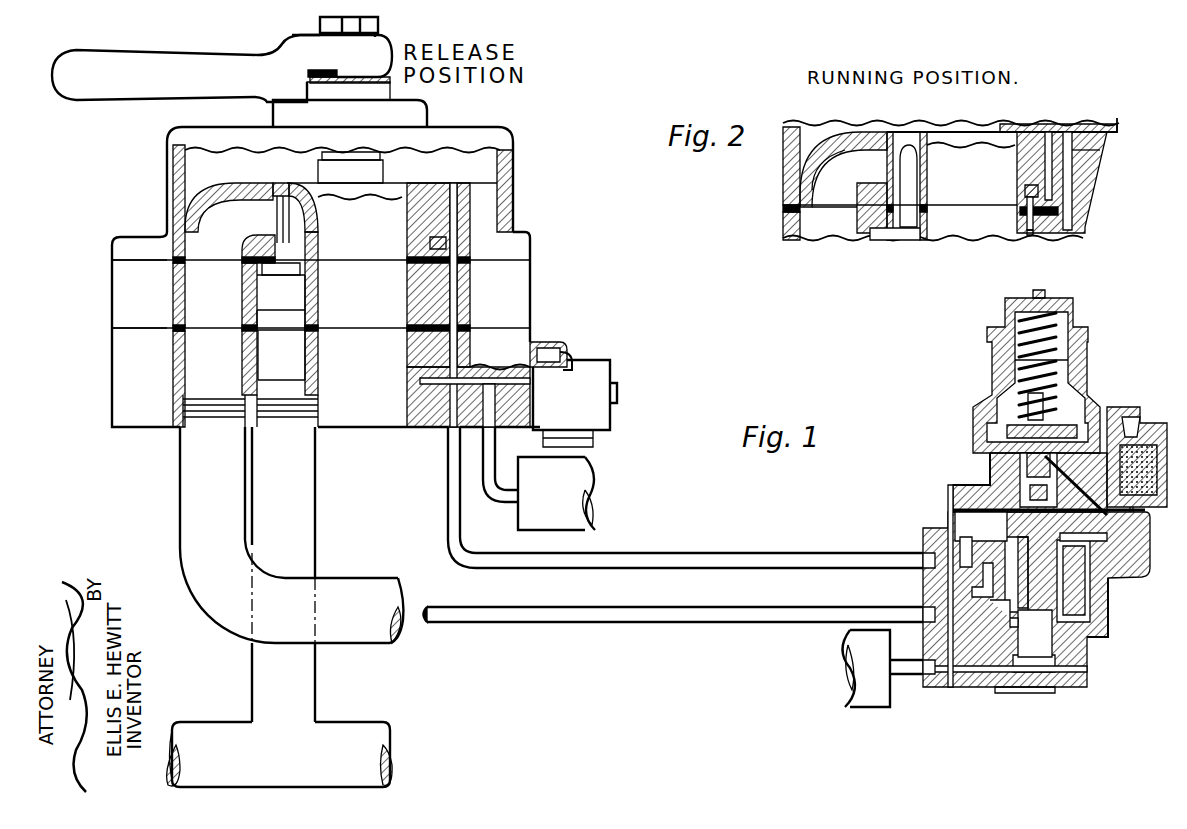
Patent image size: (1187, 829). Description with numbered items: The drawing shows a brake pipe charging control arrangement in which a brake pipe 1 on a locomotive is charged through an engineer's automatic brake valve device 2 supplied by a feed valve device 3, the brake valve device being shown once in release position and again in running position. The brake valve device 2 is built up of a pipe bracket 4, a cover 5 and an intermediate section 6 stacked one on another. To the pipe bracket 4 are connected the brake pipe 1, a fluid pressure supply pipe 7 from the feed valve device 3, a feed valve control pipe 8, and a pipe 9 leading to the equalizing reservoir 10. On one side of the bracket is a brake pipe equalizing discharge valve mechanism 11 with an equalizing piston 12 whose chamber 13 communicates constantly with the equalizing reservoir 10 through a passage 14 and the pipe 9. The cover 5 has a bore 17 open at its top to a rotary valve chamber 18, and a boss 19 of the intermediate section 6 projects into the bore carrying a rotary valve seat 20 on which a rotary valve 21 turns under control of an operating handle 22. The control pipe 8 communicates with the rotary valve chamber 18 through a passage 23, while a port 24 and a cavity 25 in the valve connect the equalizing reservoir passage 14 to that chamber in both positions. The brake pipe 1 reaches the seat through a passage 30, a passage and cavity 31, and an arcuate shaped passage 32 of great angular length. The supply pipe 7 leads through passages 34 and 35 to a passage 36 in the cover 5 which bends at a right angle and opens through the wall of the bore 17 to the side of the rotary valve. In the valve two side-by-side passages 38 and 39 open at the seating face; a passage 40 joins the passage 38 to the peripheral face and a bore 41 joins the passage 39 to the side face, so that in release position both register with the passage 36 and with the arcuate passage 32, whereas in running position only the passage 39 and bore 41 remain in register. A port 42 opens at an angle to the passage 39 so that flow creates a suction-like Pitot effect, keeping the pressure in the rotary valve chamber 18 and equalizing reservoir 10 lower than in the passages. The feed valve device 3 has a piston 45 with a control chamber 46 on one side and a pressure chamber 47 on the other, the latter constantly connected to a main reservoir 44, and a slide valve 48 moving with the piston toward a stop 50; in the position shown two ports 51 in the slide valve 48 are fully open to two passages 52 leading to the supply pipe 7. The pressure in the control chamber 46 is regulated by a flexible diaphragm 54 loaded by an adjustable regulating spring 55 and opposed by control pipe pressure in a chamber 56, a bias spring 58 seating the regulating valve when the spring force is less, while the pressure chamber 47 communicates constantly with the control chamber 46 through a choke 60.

In FIG. 1, the brake pipe 1 is at (195, 733).
In FIG. 1, the engineer's automatic brake valve device 2 is at (500, 127).
In FIG. 1, the feed valve device 3 is at (1083, 362).
In FIG. 1, the pipe bracket 4 is at (112, 357).
In FIG. 1, the cover 5 is at (130, 232).
In FIG. 2, the cover 5 is at (785, 187).
In FIG. 1, the intermediate section 6 is at (112, 284).
In FIG. 2, the intermediate section 6 is at (785, 233).
In FIG. 1, the fluid pressure supply pipe 7 is at (185, 460).
In FIG. 1, the feed valve control pipe 8 is at (453, 468).
In FIG. 1, the pipe 9 is at (490, 455).
In FIG. 1, the equalizing reservoir 10 is at (575, 512).
In FIG. 1, the brake pipe equalizing discharge valve mechanism 11 is at (600, 378).
In FIG. 1, the equalizing piston 12 is at (566, 360).
In FIG. 1, the chamber 13 is at (540, 346).
In FIG. 1, the equalizing reservoir passage 14 is at (488, 372).
In FIG. 2, the equalizing reservoir passage 14 is at (1027, 218).
In FIG. 1, the bore 17 is at (435, 222).
In FIG. 2, the bore 17 is at (1040, 165).
In FIG. 2, the rotary valve chamber 18 is at (1055, 128).
In FIG. 1, the boss 19 is at (250, 283).
In FIG. 2, the boss 19 is at (1033, 235).
In FIG. 1, the rotary valve seat 20 is at (300, 250).
In FIG. 2, the rotary valve seat 20 is at (919, 188).
In FIG. 1, the rotary valve 21 is at (380, 197).
In FIG. 2, the rotary valve 21 is at (1100, 150).
In FIG. 1, the operating handle 22 is at (154, 58).
In FIG. 1, the passage 23 is at (455, 300).
In FIG. 2, the passage 23 is at (1078, 181).
In FIG. 1, the port 24 is at (421, 196).
In FIG. 2, the port 24 is at (1030, 140).
In FIG. 1, the cavity 25 is at (430, 243).
In FIG. 2, the cavity 25 is at (1025, 190).
In FIG. 1, the passage 30 is at (297, 355).
In FIG. 1, the passage and cavity 31 is at (293, 300).
In FIG. 1, the arcuate shaped passage 32 is at (300, 270).
In FIG. 1, the passage 34 is at (200, 348).
In FIG. 1, the passage 35 is at (183, 290).
In FIG. 1, the passage 36 is at (183, 246).
In FIG. 2, the passage 36 is at (812, 183).
In FIG. 1, the passage 38 is at (316, 228).
In FIG. 2, the passage 39 is at (927, 172).
In FIG. 1, the passage 40 is at (277, 213).
In FIG. 2, the bore 41 is at (880, 165).
In FIG. 1, the port 42 is at (285, 183).
In FIG. 2, the port 42 is at (905, 130).
In FIG. 1, the main reservoir 44 is at (870, 697).
In FIG. 1, the piston 45 is at (1113, 537).
In FIG. 1, the control chamber 46 is at (958, 492).
In FIG. 1, the pressure chamber 47 is at (1060, 598).
In FIG. 1, the slide valve 48 is at (1012, 587).
In FIG. 1, the stop 50 is at (1148, 572).
In FIG. 1, the ports 51 is at (968, 535).
In FIG. 1, the passages 52 is at (945, 548).
In FIG. 1, the flexible diaphragm 54 is at (980, 450).
In FIG. 1, the adjustable regulating spring 55 is at (1015, 373).
In FIG. 1, the chamber 56 is at (990, 460).
In FIG. 1, the bias spring 58 is at (1060, 490).
In FIG. 1, the choke 60 is at (1105, 432).